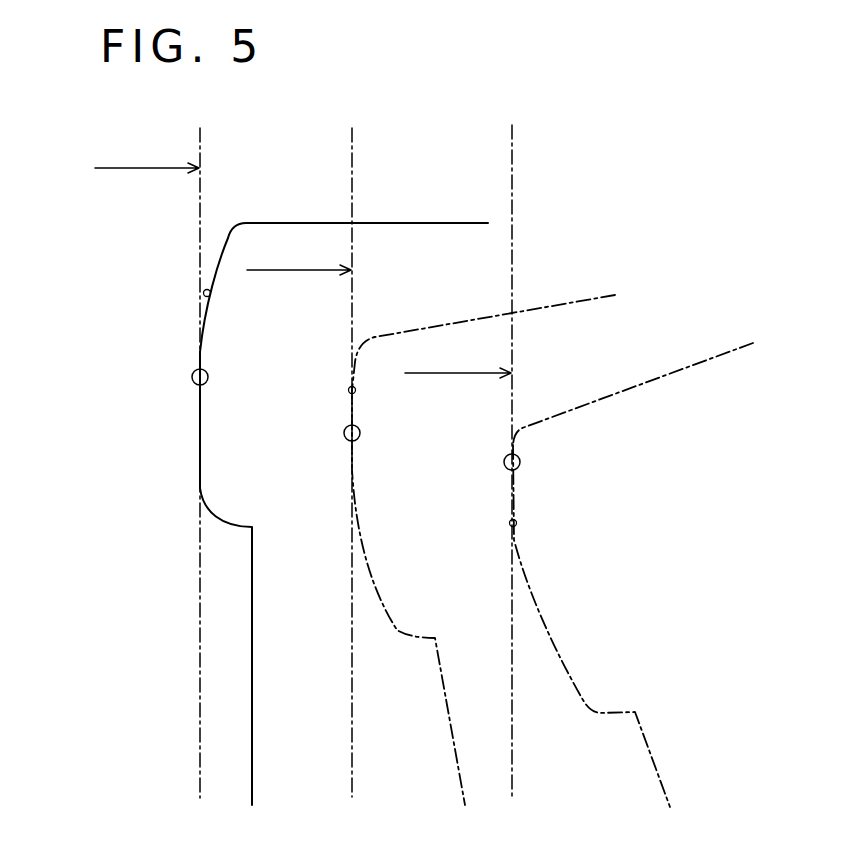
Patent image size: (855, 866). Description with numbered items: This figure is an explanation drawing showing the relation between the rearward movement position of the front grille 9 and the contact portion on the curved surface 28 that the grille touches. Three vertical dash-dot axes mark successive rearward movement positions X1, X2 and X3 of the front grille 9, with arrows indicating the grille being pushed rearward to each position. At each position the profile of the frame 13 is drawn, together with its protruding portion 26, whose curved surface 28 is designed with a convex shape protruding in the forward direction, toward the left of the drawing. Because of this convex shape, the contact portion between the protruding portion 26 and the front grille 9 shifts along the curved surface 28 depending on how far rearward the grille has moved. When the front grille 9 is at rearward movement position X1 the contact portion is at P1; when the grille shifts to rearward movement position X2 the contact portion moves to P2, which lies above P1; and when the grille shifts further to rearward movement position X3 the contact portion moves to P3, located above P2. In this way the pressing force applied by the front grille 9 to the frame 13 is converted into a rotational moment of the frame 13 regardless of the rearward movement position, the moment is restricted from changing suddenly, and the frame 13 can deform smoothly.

The front grille 9 is at (200, 593).
The frame 13 is at (420, 223).
The protruding portion 26 is at (220, 504).
The curved surface 28 is at (211, 293).
The contact portion P1 is at (192, 377).
The contact portion P2 is at (344, 433).
The contact portion P3 is at (504, 462).
The rearward movement position X1 is at (196, 114).
The rearward movement position X2 is at (349, 114).
The rearward movement position X3 is at (506, 114).